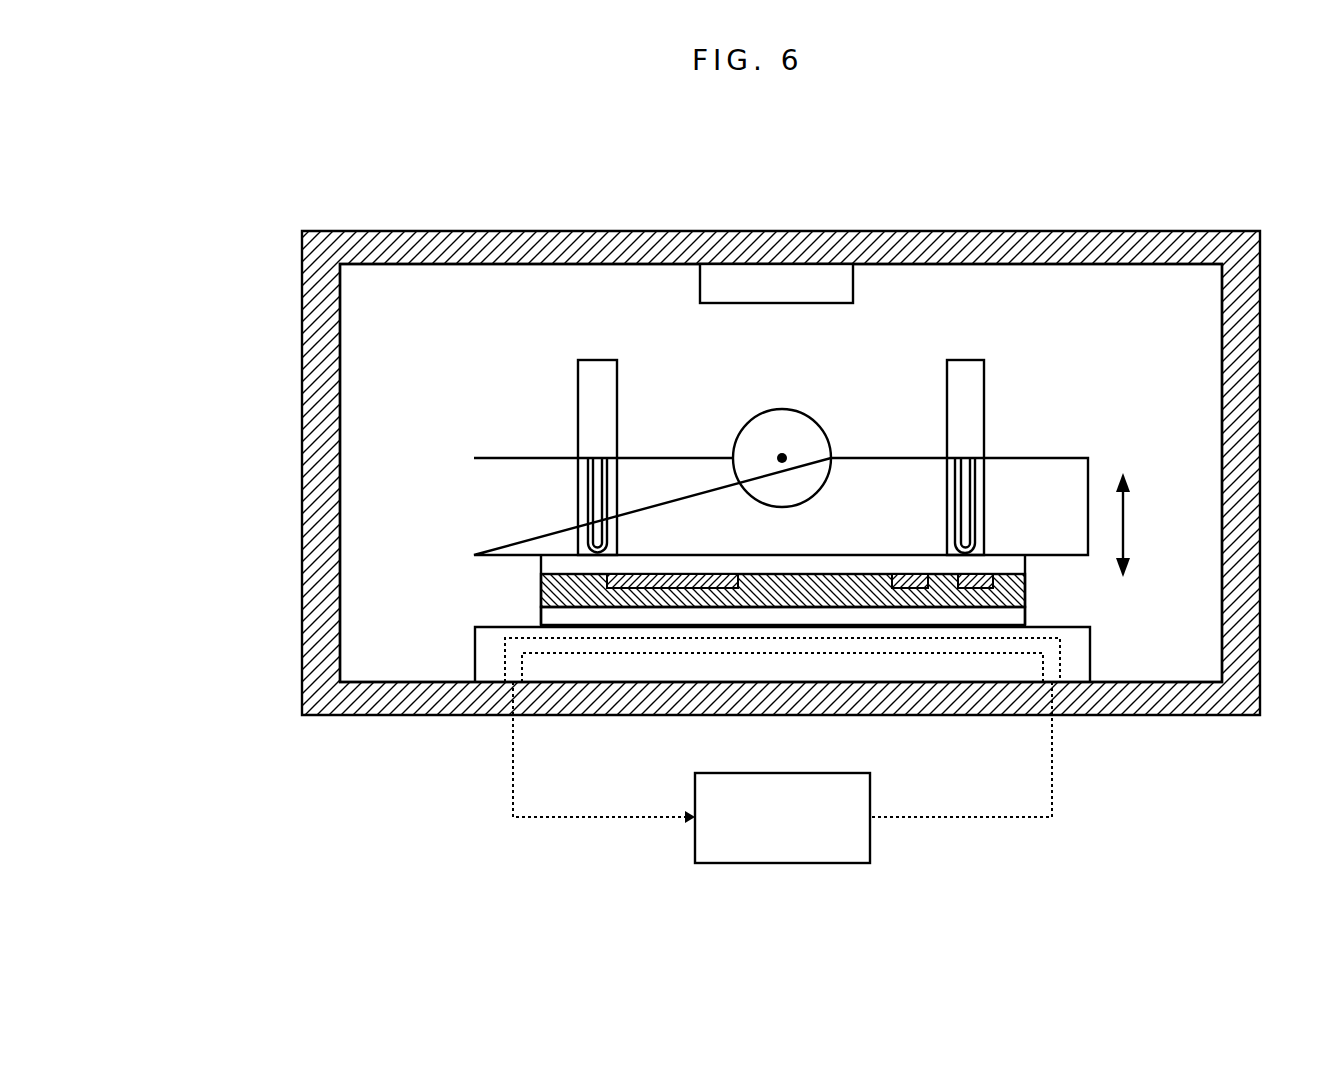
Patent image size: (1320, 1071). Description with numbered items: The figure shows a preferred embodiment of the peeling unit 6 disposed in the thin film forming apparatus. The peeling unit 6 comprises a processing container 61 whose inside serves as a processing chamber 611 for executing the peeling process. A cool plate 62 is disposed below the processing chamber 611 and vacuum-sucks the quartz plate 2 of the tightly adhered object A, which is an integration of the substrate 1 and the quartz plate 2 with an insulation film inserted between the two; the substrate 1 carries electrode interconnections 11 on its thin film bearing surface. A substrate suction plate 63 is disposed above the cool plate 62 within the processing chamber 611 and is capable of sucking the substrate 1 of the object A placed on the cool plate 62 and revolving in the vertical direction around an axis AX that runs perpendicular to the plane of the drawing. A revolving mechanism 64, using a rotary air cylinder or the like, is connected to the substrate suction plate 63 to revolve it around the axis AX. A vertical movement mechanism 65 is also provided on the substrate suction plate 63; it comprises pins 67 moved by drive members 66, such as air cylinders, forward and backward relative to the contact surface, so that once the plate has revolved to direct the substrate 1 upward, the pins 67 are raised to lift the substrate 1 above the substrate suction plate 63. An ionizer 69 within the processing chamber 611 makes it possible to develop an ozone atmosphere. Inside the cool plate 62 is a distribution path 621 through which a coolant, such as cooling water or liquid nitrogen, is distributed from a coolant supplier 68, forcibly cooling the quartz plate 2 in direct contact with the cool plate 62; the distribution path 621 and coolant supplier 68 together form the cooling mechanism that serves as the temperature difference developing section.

The peeling unit 6 is at (1026, 170).
The processing container 61 is at (322, 512).
The processing chamber 611 is at (386, 352).
The ionizer 69 is at (830, 275).
The vertical movement mechanism 65 is at (521, 334).
The drive members 66 is at (600, 378).
The substrate suction plate 63 is at (500, 475).
The pins 67 is at (595, 475).
The revolving mechanism 64 is at (765, 432).
The axis AX is at (785, 458).
The tightly adhered object A is at (405, 567).
The substrate 1 is at (545, 563).
The quartz plate 2 is at (548, 612).
The electrode interconnections 11 is at (680, 575).
The cool plate 62 is at (1075, 657).
The distribution path 621 is at (1028, 638).
The coolant supplier 68 is at (783, 863).